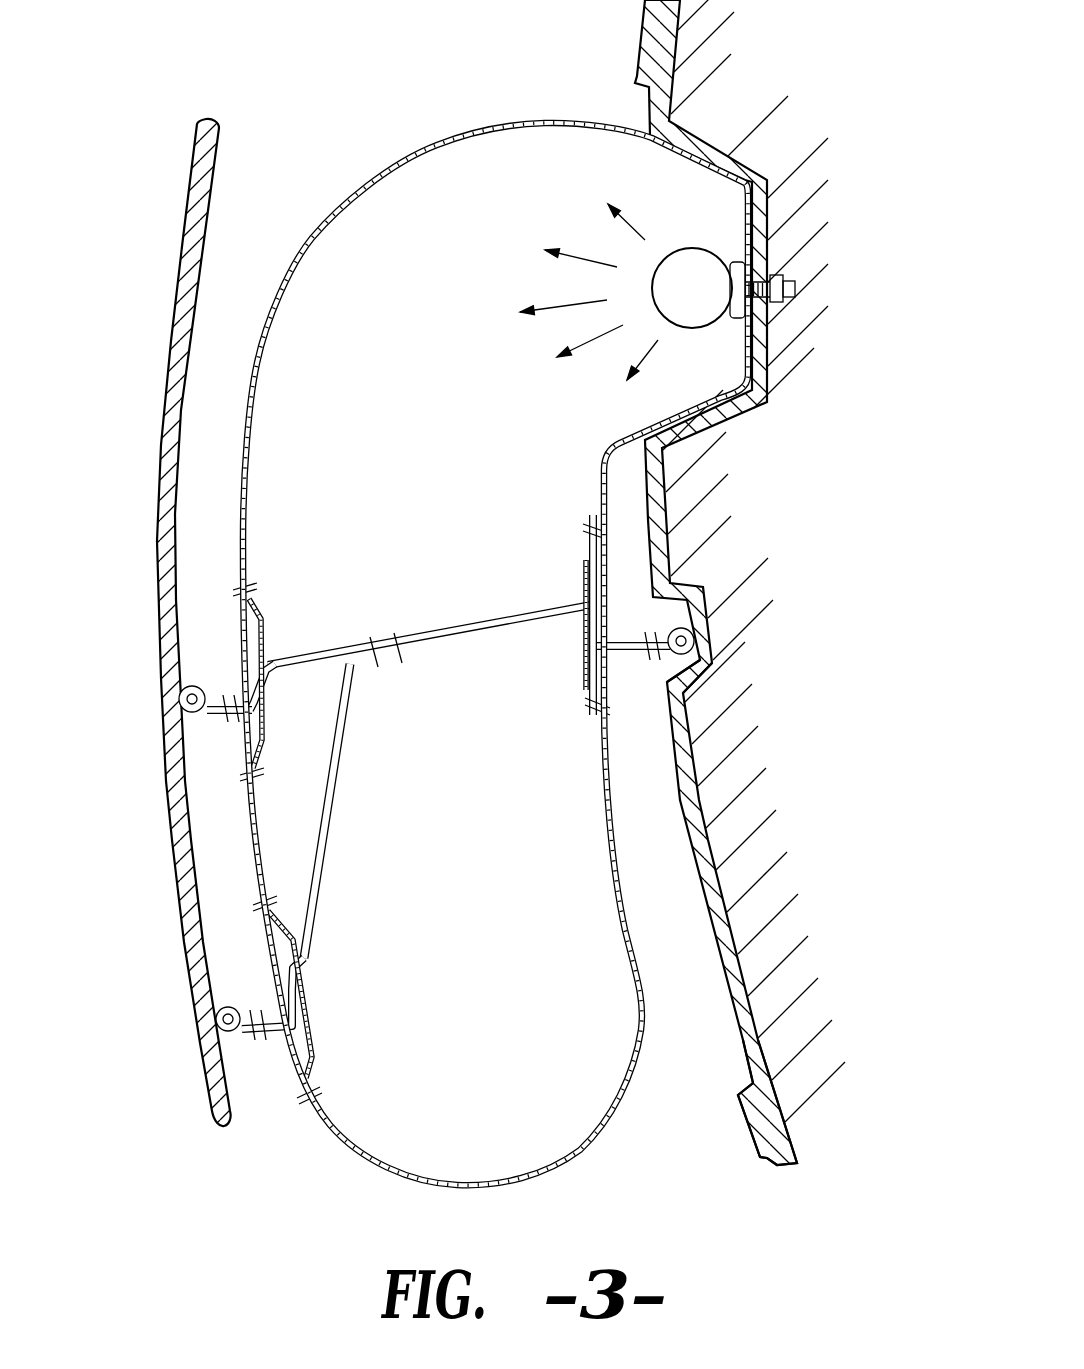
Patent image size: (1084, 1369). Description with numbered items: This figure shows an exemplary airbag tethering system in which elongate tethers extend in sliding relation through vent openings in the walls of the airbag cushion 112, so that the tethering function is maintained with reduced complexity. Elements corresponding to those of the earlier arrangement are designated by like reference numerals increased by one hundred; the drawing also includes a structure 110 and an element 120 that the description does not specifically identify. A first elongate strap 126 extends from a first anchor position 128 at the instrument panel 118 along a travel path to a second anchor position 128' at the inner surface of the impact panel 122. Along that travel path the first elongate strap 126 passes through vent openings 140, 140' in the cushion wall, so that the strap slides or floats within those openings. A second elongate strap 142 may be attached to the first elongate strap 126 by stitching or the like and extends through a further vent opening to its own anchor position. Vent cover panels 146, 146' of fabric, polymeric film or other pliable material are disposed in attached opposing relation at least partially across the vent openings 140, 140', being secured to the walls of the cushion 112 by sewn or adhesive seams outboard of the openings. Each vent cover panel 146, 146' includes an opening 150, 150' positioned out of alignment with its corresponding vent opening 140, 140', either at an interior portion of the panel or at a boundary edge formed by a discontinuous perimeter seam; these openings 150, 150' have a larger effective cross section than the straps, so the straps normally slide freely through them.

The vehicle body bracket 110 is at (727, 137).
The cushion 112 is at (447, 143).
The instrument panel 118 is at (737, 1033).
The lamp bulb 120 is at (714, 322).
The impact panel 122 is at (197, 1043).
The first elongate strap 126 is at (688, 707).
The first anchor position 128 is at (739, 597).
The second anchor position 128' is at (137, 666).
The vent opening 140 is at (697, 647).
The vent opening 140' is at (167, 749).
The second elongate strap 142 is at (331, 845).
The vent cover panel 146 is at (547, 642).
The vent cover panel 146' is at (279, 660).
The opening 150 is at (430, 594).
The opening 150' is at (305, 649).